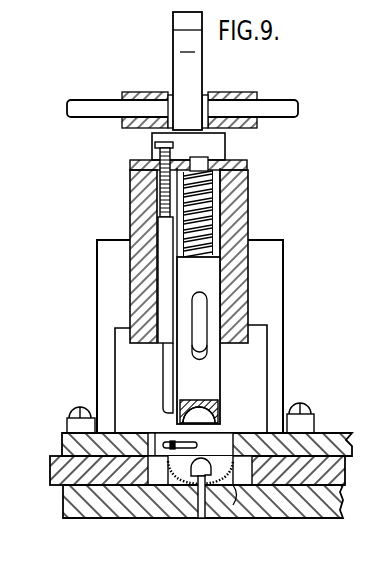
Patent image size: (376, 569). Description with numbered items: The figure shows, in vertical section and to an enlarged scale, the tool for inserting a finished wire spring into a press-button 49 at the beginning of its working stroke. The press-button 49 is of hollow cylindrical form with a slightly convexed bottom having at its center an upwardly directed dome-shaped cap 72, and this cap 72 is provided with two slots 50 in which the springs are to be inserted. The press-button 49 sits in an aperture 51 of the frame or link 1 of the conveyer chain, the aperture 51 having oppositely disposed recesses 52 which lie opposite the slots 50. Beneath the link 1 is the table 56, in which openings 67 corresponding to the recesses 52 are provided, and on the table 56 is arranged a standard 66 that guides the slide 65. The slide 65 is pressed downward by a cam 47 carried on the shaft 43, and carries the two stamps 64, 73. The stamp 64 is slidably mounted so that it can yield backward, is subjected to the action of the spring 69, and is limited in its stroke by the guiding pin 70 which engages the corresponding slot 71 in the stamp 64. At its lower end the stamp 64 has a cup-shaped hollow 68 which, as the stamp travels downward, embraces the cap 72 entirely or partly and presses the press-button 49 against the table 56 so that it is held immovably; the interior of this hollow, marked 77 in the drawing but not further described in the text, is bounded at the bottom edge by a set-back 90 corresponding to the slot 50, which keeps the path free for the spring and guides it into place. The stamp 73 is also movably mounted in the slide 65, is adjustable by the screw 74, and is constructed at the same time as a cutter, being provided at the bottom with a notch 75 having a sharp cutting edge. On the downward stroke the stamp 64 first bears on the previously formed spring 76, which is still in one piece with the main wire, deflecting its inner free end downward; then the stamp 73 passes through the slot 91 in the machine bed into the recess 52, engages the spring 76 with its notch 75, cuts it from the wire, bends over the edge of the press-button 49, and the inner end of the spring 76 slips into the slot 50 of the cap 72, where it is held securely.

The frame or link 1 is at (345, 462).
The shaft 43 is at (182, 106).
The cam 47 is at (197, 78).
The press-button 49 is at (231, 446).
The slot 50 is at (204, 487).
The aperture 51 is at (236, 502).
The recess 52 is at (200, 470).
The table 56 is at (65, 500).
The stamp 64 is at (219, 380).
The slide 65 is at (243, 219).
The standard 66 is at (275, 279).
The opening 67 is at (196, 438).
The cup-shaped hollow 68 is at (219, 404).
The spring 69 is at (226, 165).
The guiding pin 70 is at (199, 293).
The slot 71 is at (197, 352).
The dome-shaped protuberance or cap 72 is at (202, 460).
The stamp 73 is at (167, 280).
The screw 74 is at (160, 192).
The notch 75 is at (172, 396).
The spring 76 is at (171, 442).
The recess 77 is at (186, 403).
The set-back 90 is at (196, 422).
The slot 91 is at (153, 445).